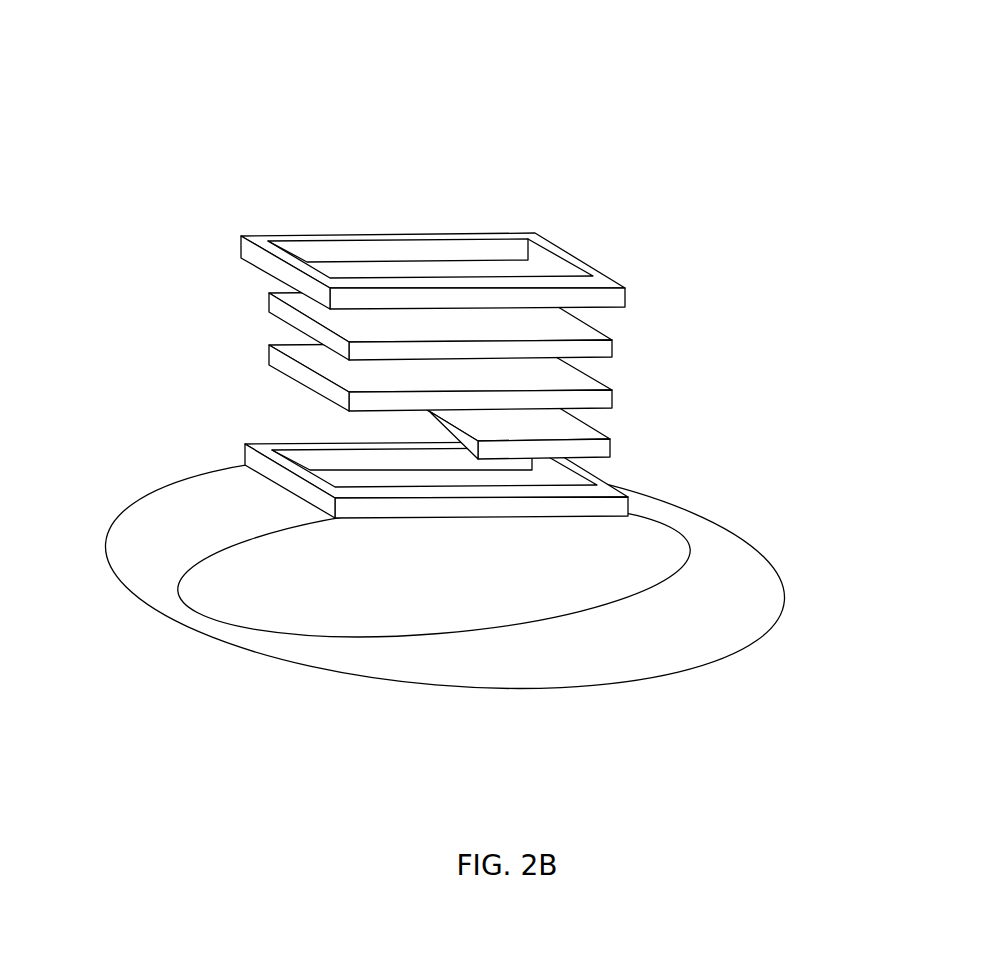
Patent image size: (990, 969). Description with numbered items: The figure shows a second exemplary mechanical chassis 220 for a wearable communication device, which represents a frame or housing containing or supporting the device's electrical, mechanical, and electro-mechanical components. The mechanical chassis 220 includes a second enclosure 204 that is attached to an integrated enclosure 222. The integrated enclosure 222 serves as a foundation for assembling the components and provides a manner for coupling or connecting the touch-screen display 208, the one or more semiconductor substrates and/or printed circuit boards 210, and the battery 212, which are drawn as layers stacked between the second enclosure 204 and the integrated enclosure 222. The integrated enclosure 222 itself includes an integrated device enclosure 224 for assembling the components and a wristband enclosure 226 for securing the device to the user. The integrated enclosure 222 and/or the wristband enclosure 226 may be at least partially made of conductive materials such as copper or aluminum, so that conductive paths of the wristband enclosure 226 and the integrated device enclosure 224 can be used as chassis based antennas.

The second enclosure 204 is at (626, 297).
The touch-screen display 208 is at (613, 350).
The one or more semiconductor substrates and/or printed circuit boards 210 is at (613, 403).
The battery 212 is at (613, 448).
The mechanical chassis 220 is at (944, 99).
The integrated enclosure 222 is at (787, 598).
The integrated device enclosure 224 is at (245, 445).
The wristband enclosure 226 is at (551, 658).